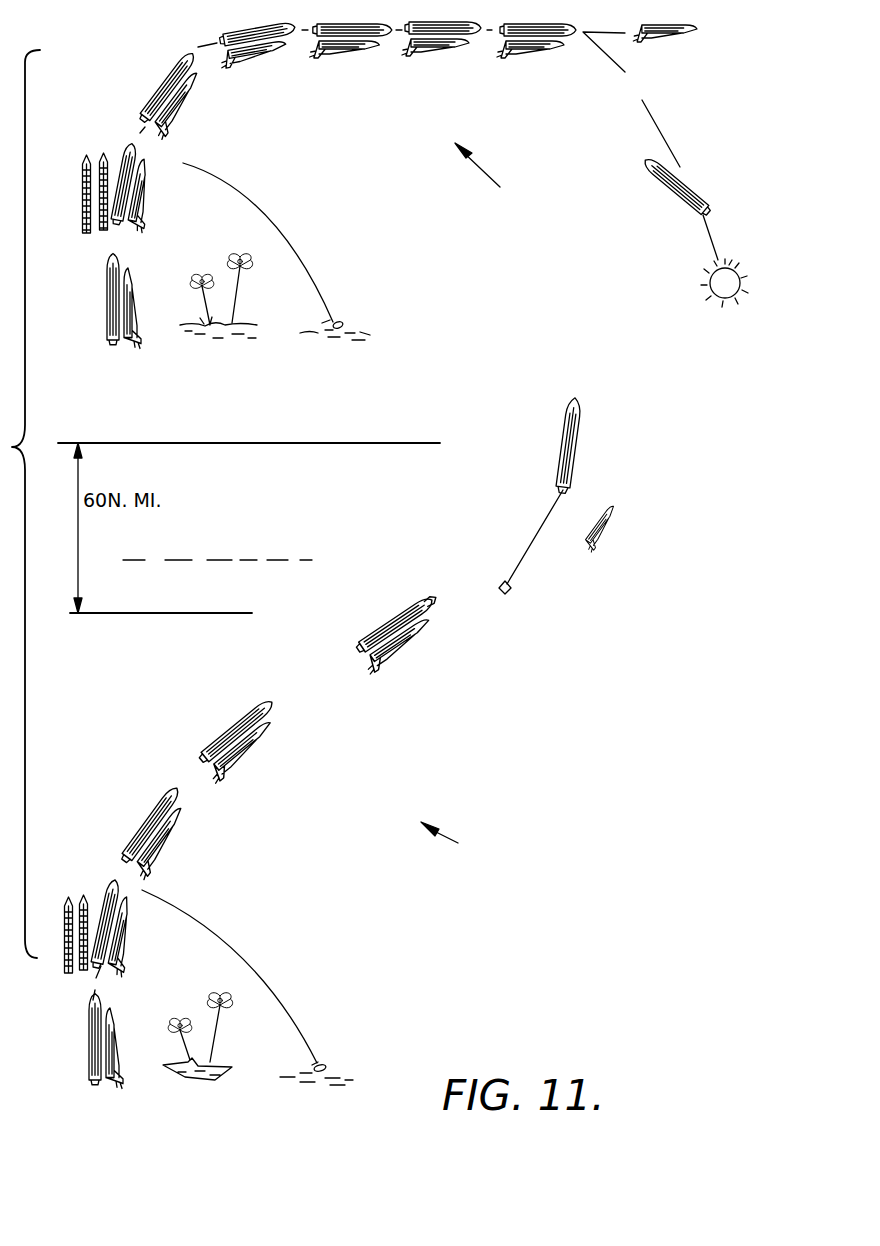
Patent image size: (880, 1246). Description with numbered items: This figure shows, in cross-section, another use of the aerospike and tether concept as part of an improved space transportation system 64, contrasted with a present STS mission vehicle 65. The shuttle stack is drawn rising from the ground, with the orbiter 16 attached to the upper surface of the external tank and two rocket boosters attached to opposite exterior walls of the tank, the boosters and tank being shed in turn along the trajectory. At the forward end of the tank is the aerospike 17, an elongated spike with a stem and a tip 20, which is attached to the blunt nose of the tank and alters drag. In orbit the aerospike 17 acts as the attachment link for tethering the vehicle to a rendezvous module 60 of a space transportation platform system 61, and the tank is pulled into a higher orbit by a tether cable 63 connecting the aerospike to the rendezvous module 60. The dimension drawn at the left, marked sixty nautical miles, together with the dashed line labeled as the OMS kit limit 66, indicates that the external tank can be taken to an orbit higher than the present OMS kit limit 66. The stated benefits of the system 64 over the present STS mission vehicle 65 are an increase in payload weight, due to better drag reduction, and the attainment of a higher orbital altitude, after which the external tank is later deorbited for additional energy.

The orbiter 16 is at (398, 650).
The aerospike 17 is at (462, 573).
The tip 20 is at (438, 593).
The rendezvous module 60 is at (501, 597).
The space transportation platform system 61 is at (578, 445).
The tether cable 63 is at (522, 563).
The space transportation system 64 is at (452, 839).
The present STS mission vehicle 65 is at (489, 179).
The OMS kit limit 66 is at (192, 560).